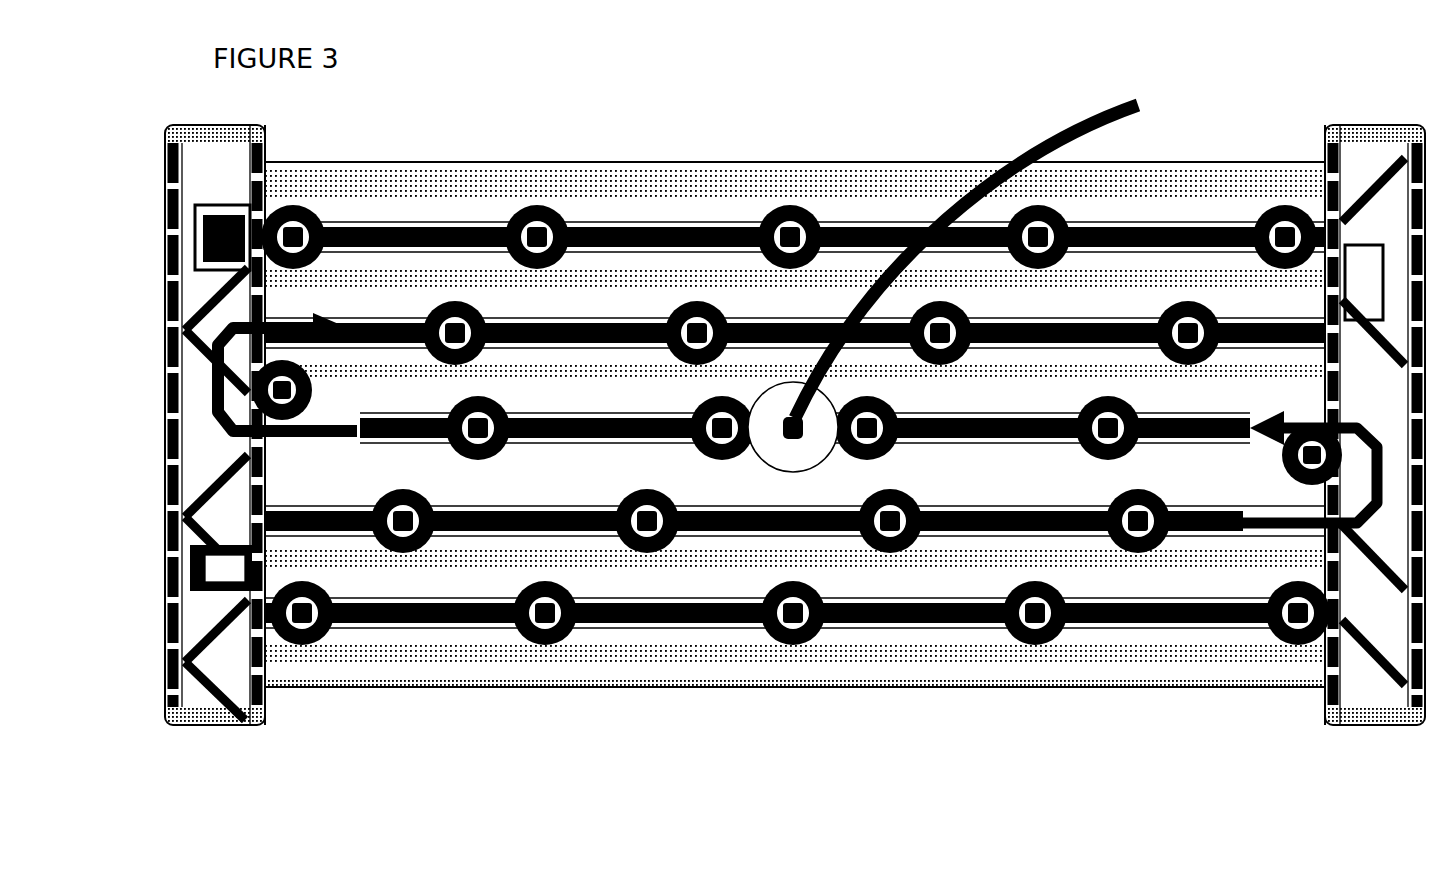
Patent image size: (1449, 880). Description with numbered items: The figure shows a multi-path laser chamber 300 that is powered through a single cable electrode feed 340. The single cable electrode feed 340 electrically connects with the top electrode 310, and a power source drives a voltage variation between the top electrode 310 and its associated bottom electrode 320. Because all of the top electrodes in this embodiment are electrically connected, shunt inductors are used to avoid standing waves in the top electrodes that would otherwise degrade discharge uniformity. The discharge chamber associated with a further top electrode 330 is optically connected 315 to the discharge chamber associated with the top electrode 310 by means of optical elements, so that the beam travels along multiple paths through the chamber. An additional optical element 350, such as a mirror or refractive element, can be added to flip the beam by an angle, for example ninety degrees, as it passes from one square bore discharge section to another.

The multi-path laser chamber 300 is at (795, 396).
The top electrode 310 is at (410, 428).
The optical connection 315 is at (1243, 524).
The bottom electrode 320 is at (668, 655).
The top electrode 330 is at (988, 522).
The single cable electrode feed 340 is at (999, 246).
The additional optical element 350 is at (207, 568).